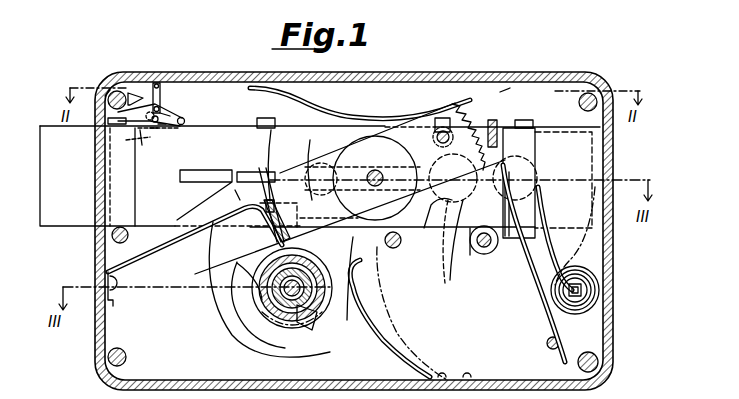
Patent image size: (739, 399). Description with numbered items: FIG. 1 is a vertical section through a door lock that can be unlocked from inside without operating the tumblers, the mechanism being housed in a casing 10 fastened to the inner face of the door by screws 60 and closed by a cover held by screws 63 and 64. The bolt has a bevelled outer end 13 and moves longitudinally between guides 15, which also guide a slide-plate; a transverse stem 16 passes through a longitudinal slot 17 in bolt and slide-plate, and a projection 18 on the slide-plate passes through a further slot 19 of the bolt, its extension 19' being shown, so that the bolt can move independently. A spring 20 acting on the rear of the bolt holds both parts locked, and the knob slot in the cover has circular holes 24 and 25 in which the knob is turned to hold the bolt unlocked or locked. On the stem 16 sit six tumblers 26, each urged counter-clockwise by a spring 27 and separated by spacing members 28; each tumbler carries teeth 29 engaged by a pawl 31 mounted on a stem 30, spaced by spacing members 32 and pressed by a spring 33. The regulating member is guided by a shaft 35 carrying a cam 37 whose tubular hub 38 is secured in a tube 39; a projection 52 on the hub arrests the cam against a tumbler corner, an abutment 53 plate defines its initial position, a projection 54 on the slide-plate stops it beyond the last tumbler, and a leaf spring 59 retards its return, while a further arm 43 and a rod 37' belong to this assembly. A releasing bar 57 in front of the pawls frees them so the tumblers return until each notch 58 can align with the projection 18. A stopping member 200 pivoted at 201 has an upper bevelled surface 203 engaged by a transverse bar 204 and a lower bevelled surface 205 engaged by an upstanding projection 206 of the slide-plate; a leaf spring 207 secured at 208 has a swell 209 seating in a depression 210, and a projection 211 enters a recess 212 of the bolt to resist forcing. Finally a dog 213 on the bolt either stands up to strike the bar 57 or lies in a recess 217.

The casing 10 is at (96, 343).
The outer end of bolt 13 is at (70, 218).
The guides 15 is at (265, 118).
The stem 16 is at (393, 137).
The longitudinal slot 17 is at (320, 175).
The projection 18 is at (246, 175).
The longitudinal slot 19 is at (204, 161).
The bar extension 19' is at (226, 172).
The spring 20 is at (553, 248).
The circular hole 24 is at (530, 167).
The circular hole 25 is at (450, 278).
The tumblers 26 is at (430, 232).
The spring 27 is at (353, 113).
The spacing members 28 is at (377, 172).
The teeth 29 is at (467, 127).
The stem 30 is at (466, 250).
The pawl 31 is at (522, 235).
The spacing members 32 is at (488, 254).
The spring 33 is at (546, 294).
The shaft 35 is at (292, 322).
The cam 37 is at (268, 294).
The rod 37' is at (340, 217).
The tubular hub 38 is at (312, 318).
The tube 39 is at (267, 323).
The arm 43 is at (258, 297).
The projection 52 is at (225, 262).
The abutment 53 is at (165, 248).
The projection 54 is at (267, 200).
The releasing bar 57 is at (495, 127).
The notch 58 is at (278, 178).
The leaf spring 59 is at (385, 345).
The screws 60 is at (600, 359).
The screw 63 is at (126, 240).
The screw 64 is at (393, 248).
The stopping member 200 is at (165, 114).
The pivot 201 is at (182, 123).
The upper bevelled surface 203 is at (150, 105).
The transverse bar 204 is at (135, 97).
The lower bevelled surface 205 is at (100, 97).
The projection 206 is at (108, 125).
The leaf spring 207 is at (173, 113).
The securing point 208 is at (160, 103).
The swell 209 is at (158, 126).
The depression 210 is at (154, 128).
The projection 211 is at (142, 140).
The recess 212 is at (130, 140).
The dog 213 is at (442, 120).
The recess 217 is at (505, 90).